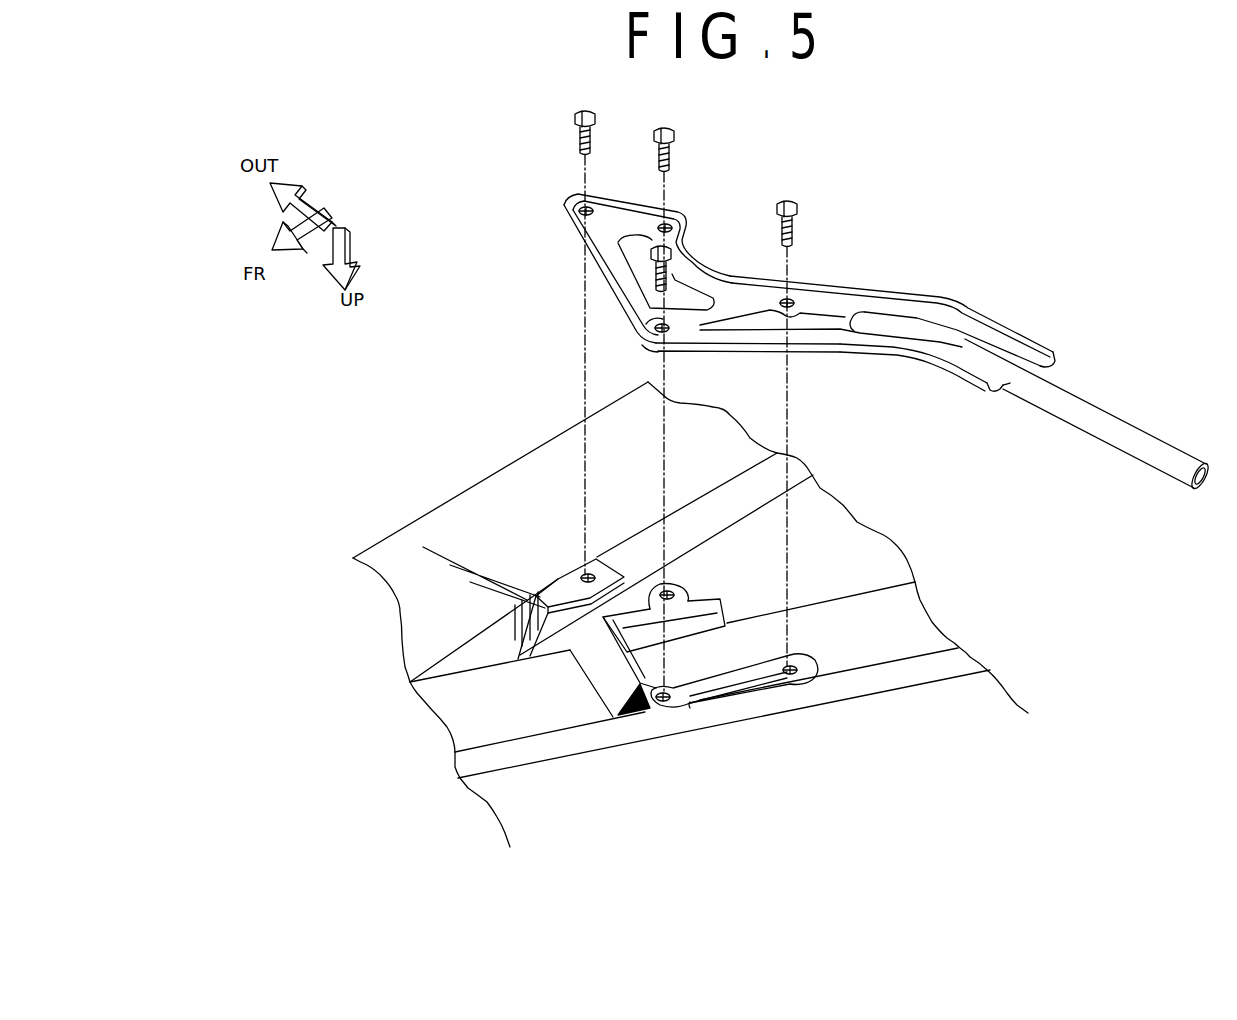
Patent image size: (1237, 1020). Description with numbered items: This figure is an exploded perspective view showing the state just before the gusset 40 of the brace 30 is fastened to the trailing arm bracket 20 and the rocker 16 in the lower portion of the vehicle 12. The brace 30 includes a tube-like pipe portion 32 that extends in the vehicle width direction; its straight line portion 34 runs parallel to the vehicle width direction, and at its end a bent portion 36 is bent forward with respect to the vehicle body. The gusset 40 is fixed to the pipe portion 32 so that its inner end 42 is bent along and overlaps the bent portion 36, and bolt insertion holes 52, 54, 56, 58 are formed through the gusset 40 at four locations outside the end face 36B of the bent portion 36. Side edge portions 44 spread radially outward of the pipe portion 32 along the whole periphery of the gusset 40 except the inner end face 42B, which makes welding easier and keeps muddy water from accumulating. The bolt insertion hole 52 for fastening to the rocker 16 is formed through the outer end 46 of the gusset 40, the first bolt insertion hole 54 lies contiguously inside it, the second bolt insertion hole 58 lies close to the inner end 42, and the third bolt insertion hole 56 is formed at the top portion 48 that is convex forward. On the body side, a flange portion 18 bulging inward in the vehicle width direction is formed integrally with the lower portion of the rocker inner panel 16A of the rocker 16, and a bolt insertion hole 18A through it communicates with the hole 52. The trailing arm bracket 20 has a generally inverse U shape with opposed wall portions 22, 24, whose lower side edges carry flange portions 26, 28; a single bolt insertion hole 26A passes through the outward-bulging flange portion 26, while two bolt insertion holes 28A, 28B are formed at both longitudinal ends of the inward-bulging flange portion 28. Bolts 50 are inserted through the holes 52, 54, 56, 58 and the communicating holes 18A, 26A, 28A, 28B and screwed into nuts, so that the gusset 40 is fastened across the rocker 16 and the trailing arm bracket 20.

The vehicle 12 is at (370, 542).
The rocker 16 is at (460, 513).
The rocker inner panel 16A is at (487, 647).
The flange portion 18 is at (570, 652).
The bolt insertion hole 18A is at (583, 577).
The trailing arm bracket 20 is at (740, 621).
The wall portion 22 is at (727, 612).
The wall portion 24 is at (647, 708).
The flange portion 26 is at (680, 594).
The bolt insertion hole 26A is at (670, 585).
The flange portion 28 is at (733, 672).
The bolt insertion hole 28A is at (690, 702).
The bolt insertion hole 28B is at (813, 680).
The brace 30 is at (1016, 329).
The pipe portion 32 is at (1153, 437).
The line portion 34 is at (1117, 437).
The bent portion 36 is at (968, 322).
The end face 36B is at (842, 328).
The gusset 40 is at (888, 366).
The inner end 42 is at (920, 360).
The inner end face 42B is at (1003, 395).
The side edge portion 44 is at (1043, 350).
The outer end 46 is at (562, 201).
The top portion 48 is at (652, 340).
The bolt 50 is at (588, 108).
The bolt insertion hole 52 is at (578, 203).
The first bolt insertion hole 54 is at (669, 220).
The third bolt insertion hole 56 is at (653, 321).
The second bolt insertion hole 58 is at (792, 298).